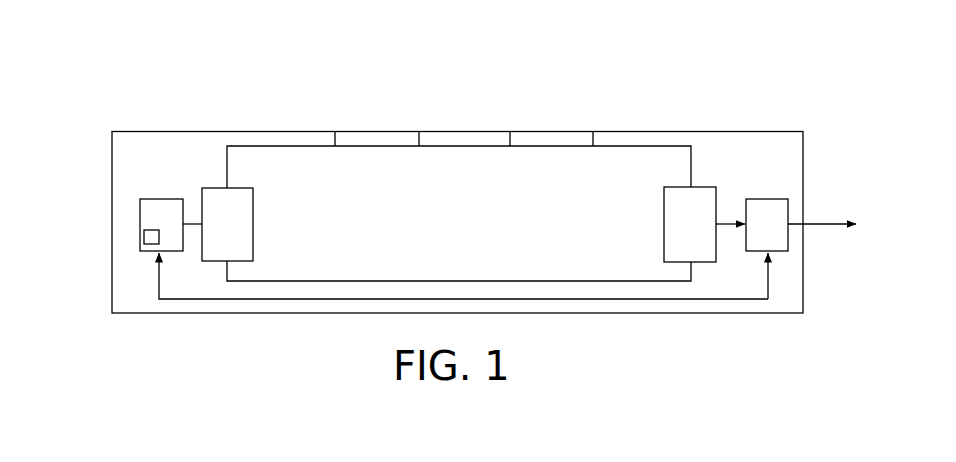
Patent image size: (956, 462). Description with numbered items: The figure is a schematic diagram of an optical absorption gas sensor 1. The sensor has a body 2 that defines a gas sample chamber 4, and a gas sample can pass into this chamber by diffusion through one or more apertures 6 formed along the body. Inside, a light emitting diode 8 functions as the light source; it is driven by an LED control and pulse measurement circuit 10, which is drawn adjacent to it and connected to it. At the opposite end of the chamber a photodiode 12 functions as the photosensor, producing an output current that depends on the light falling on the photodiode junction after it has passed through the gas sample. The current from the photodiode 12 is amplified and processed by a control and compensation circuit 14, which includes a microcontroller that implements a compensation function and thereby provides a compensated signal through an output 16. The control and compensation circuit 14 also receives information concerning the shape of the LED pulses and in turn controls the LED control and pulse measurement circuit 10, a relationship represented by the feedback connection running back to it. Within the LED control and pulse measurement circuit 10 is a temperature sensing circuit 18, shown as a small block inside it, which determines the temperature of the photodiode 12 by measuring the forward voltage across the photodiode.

The optical absorption gas sensor 1 is at (112, 50).
The body 2 is at (266, 131).
The gas sample chamber 4 is at (322, 160).
The apertures 6 is at (376, 140).
The light emitting diode 8 is at (212, 187).
The LED control and pulse measurement circuit 10 is at (140, 209).
The photodiode 12 is at (703, 262).
The control and compensation circuit 14 is at (778, 251).
The output 16 is at (825, 223).
The temperature sensing circuit 18 is at (144, 237).